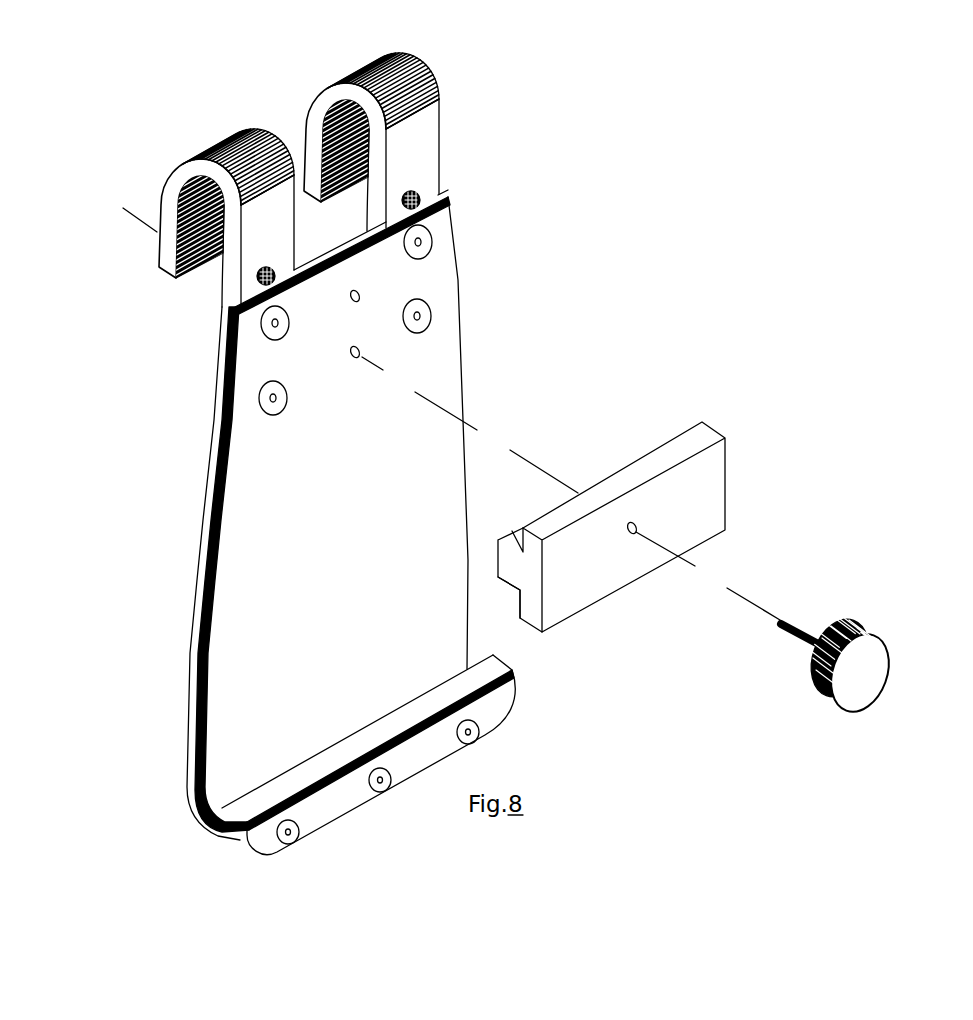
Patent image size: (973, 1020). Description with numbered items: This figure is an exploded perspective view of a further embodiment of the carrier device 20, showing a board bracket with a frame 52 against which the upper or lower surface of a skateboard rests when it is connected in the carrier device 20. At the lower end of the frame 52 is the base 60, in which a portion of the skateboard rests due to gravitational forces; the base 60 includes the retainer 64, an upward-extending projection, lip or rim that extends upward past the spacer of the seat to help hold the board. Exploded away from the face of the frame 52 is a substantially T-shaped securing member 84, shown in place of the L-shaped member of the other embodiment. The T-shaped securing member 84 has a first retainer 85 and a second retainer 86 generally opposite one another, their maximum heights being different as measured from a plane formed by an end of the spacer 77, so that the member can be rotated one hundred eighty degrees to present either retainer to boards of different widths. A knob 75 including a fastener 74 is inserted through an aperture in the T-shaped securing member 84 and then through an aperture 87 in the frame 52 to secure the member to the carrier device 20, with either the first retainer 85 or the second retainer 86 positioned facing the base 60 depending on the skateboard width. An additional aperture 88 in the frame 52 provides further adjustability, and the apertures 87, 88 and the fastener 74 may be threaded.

The carrier device 20 is at (189, 542).
The frame 52 is at (370, 543).
The base 60 is at (211, 822).
The retainer 64 is at (485, 705).
The fastener 74 is at (799, 620).
The knob 75 is at (866, 618).
The spacer 77 is at (497, 560).
The T-shaped securing member 84 is at (729, 467).
The first retainer 85 is at (516, 540).
The second retainer 86 is at (521, 592).
The aperture 87 is at (360, 347).
The additional aperture 88 is at (352, 290).